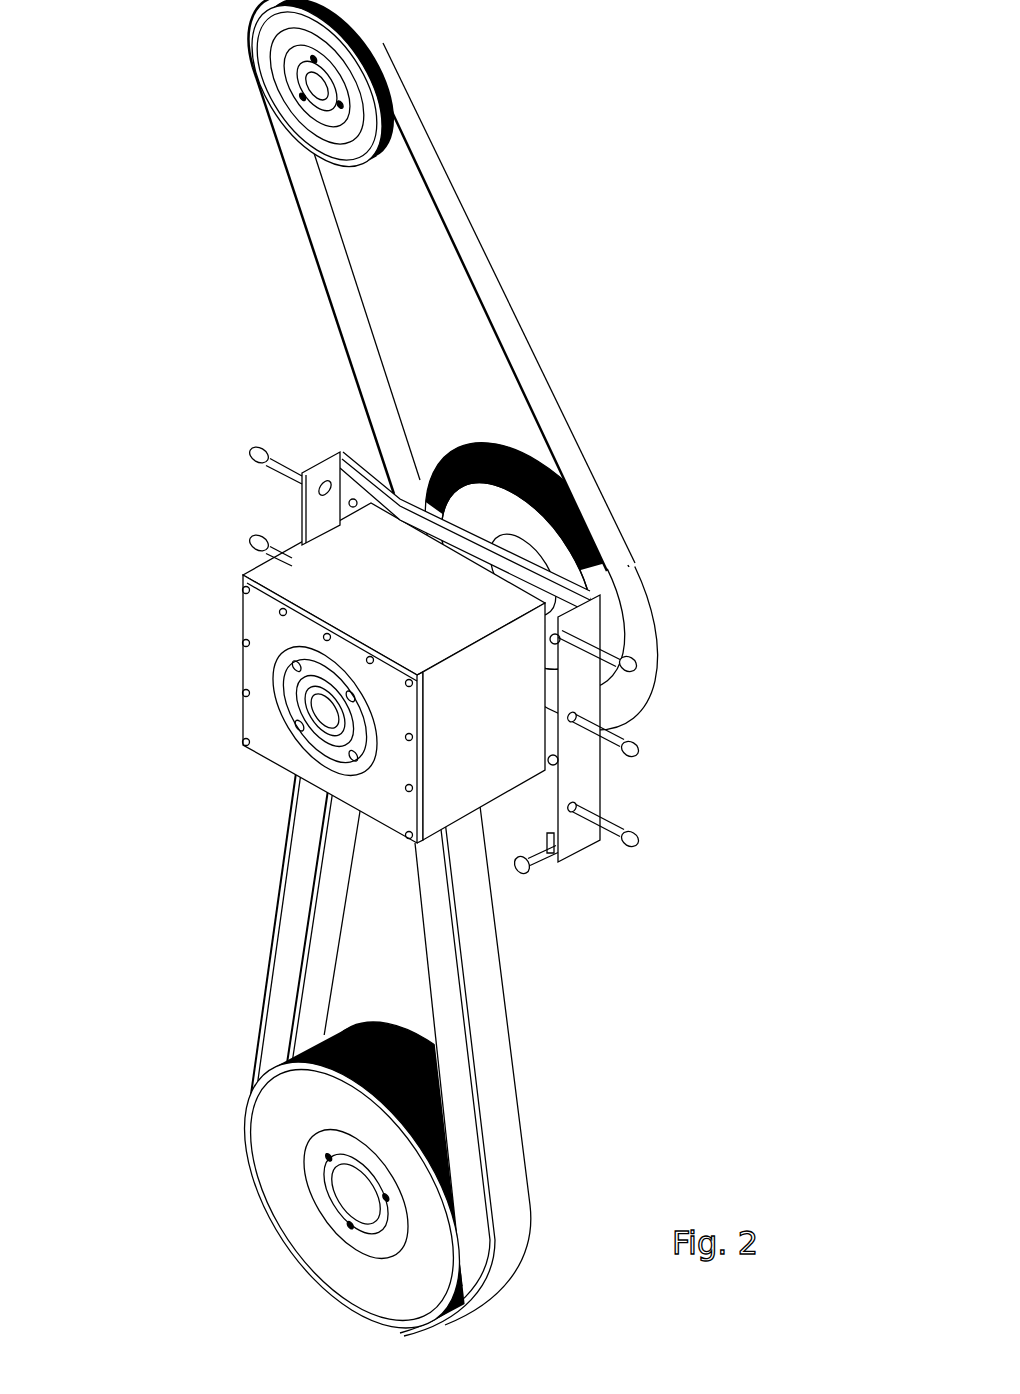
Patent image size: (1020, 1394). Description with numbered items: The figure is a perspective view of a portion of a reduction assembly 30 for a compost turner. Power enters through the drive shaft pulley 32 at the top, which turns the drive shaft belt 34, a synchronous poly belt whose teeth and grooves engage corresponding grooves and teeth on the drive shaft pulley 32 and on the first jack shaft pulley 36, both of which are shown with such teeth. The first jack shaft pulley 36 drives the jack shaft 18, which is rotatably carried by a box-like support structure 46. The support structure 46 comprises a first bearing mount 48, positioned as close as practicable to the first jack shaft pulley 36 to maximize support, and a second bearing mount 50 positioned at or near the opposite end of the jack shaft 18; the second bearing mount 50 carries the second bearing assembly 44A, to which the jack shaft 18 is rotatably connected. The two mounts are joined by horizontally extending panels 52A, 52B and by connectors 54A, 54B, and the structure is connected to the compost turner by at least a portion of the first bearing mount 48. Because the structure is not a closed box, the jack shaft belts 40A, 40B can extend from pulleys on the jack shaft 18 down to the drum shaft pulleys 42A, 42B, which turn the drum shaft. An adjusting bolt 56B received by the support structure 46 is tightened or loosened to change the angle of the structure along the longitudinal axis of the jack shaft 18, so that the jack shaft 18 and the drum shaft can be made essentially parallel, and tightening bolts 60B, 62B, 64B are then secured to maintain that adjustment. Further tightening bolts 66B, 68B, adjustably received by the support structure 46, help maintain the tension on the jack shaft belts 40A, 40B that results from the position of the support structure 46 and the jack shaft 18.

The jack shaft 18 is at (302, 727).
The reduction assembly 30 is at (745, 232).
The drive shaft pulley 32 is at (293, 67).
The drive shaft belt 34 is at (363, 352).
The first jack shaft pulley 36 is at (520, 520).
The jack shaft belt 40A is at (460, 1078).
The jack shaft belt 40B is at (498, 1044).
The drum shaft pulley 42A is at (315, 1064).
The drum shaft pulley 42B is at (355, 1018).
The second bearing assembly 44A is at (327, 677).
The support structure 46 is at (397, 567).
The first bearing mount 48 is at (337, 453).
The second bearing mount 50 is at (262, 630).
The horizontally extending panel 52A is at (232, 685).
The horizontally extending panel 52B is at (477, 745).
The connector 54A is at (310, 464).
The connector 54B is at (583, 783).
The adjusting bolt 56B is at (560, 866).
The tightening bolt 60B is at (636, 663).
The tightening bolt 62B is at (640, 750).
The tightening bolt 64B is at (640, 841).
The tightening bolt 66B is at (557, 640).
The tightening bolt 68B is at (558, 762).